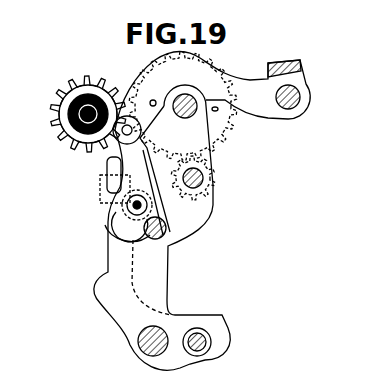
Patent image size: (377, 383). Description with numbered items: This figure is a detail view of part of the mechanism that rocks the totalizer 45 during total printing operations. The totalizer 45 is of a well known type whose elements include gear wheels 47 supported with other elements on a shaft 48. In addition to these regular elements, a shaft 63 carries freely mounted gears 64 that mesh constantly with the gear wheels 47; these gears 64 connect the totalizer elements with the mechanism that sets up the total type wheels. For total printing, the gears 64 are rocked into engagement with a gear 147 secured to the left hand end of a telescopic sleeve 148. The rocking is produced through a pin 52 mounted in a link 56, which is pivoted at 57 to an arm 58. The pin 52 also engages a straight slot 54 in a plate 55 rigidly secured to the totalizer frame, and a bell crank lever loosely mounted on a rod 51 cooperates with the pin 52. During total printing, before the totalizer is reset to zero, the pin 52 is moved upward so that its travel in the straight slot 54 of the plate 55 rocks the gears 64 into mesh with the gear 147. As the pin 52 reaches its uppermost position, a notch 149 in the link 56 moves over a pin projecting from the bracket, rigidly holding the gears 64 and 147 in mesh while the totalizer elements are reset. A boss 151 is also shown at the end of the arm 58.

The gear 147 is at (71, 92).
The telescopic sleeve 148 is at (64, 142).
The gear 64 is at (227, 134).
The arm 58 is at (248, 80).
The pivot boss 151 is at (300, 92).
The shaft 63 is at (190, 96).
The pivot 57 is at (141, 130).
The shaft 48 is at (214, 177).
The gear wheel 47 is at (212, 198).
The totalizer 45 is at (103, 298).
The rod 51 is at (141, 347).
The straight slot 54 is at (117, 182).
The link 56 is at (127, 165).
The notch 149 is at (122, 193).
The pin 52 is at (105, 225).
The plate 55 is at (110, 240).